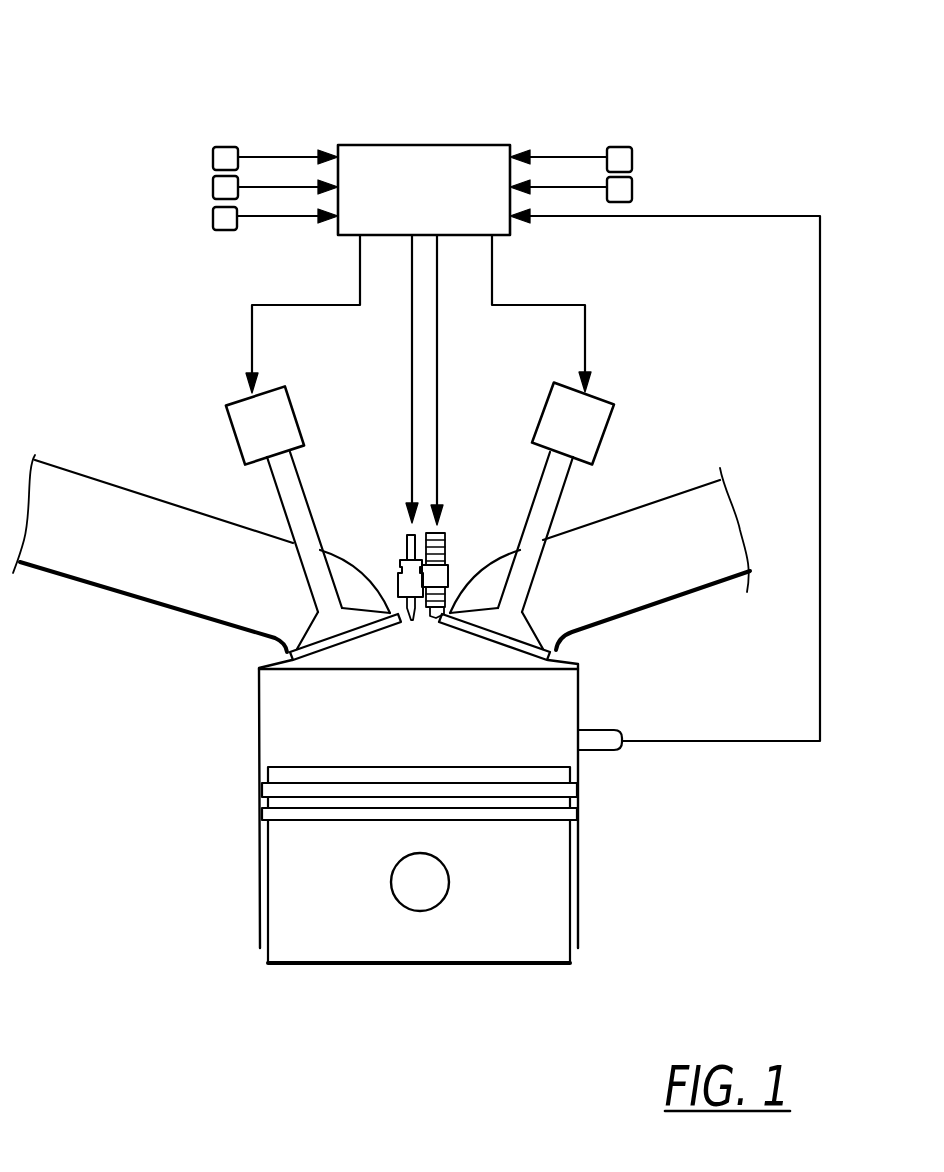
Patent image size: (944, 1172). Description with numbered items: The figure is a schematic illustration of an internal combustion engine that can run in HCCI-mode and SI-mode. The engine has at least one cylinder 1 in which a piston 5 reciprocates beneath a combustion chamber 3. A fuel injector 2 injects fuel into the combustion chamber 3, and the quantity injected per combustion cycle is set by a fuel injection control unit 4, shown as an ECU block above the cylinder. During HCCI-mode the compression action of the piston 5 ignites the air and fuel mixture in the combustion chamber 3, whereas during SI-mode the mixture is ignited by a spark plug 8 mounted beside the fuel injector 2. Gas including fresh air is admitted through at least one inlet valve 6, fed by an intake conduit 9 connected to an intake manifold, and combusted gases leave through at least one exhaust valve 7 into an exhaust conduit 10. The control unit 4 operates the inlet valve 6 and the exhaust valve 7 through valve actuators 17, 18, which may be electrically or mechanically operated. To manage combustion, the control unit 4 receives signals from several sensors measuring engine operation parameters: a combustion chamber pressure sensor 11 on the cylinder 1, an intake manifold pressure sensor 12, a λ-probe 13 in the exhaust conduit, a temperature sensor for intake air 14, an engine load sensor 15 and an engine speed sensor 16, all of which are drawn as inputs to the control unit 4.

The cylinder 1 is at (258, 735).
The fuel injector 2 is at (400, 537).
The combustion chamber 3 is at (440, 733).
The fuel injection control unit 4 is at (430, 143).
The piston 5 is at (580, 843).
The inlet valve 6 is at (312, 497).
The exhaust valve 7 is at (530, 493).
The spark plug 8 is at (447, 517).
The intake conduit 9 is at (60, 577).
The exhaust conduit 10 is at (673, 600).
The combustion chamber pressure sensor 11 is at (603, 750).
The intake manifold pressure sensor 12 is at (637, 187).
The λ-probe 13 is at (637, 155).
The temperature sensor for intake air 14 is at (213, 218).
The engine load sensor 15 is at (213, 185).
The engine speed sensor 16 is at (213, 158).
The valve actuator 17 is at (240, 440).
The valve actuator 18 is at (595, 432).